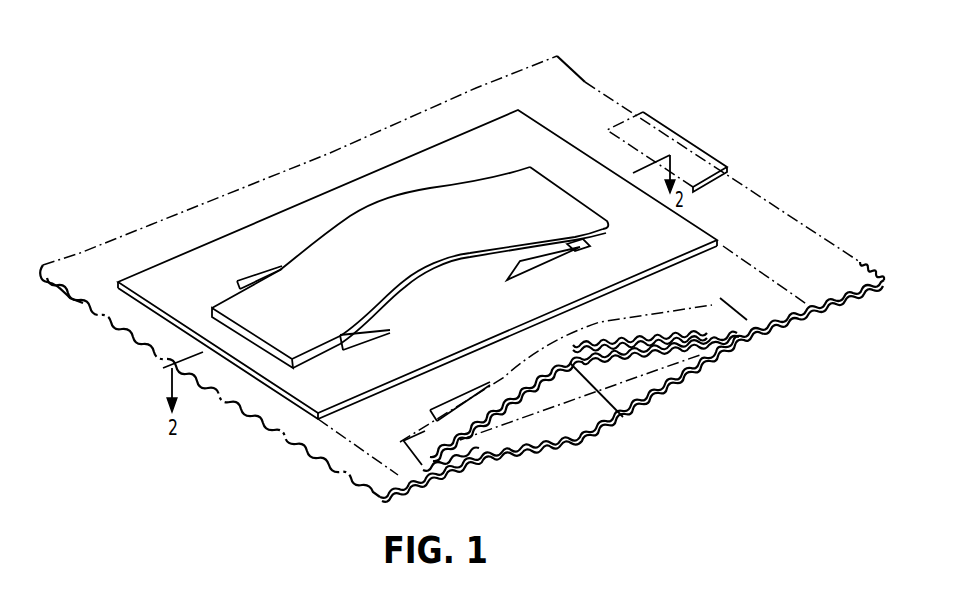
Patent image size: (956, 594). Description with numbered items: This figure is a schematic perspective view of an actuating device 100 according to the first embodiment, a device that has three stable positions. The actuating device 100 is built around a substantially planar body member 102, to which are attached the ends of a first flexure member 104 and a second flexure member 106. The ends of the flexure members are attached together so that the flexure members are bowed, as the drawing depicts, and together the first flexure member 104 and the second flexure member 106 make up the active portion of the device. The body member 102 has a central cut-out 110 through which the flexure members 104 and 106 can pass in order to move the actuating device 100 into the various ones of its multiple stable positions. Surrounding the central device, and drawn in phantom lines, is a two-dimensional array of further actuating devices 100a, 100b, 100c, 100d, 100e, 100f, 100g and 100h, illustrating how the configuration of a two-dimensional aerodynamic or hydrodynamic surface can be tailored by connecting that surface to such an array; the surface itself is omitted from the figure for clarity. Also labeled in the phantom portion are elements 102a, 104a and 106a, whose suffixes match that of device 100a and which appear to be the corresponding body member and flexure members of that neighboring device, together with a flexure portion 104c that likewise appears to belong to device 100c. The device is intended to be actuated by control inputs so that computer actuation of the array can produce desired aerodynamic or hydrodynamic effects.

The actuating device 100 is at (513, 133).
The actuating device 100a is at (777, 308).
The actuating device 100b is at (810, 257).
The actuating device 100c is at (747, 203).
The actuating device 100d is at (548, 74).
The actuating device 100e is at (268, 194).
The actuating device 100f is at (80, 272).
The actuating device 100g is at (233, 403).
The actuating device 100h is at (350, 466).
The body member 102 is at (550, 165).
The plate flap portion 102a is at (757, 340).
The first flexure member 104 is at (385, 210).
The strip flap portion 104a is at (620, 420).
The strip tab 104c is at (663, 140).
The second flexure member 106 is at (560, 263).
The tab flap portion 106a is at (560, 447).
The central cut-out 110 is at (253, 282).